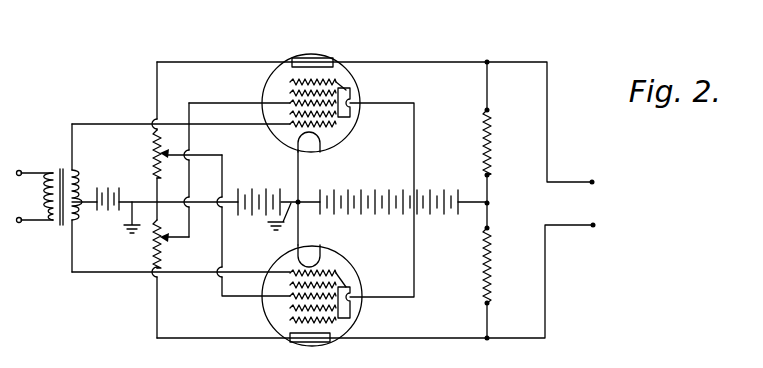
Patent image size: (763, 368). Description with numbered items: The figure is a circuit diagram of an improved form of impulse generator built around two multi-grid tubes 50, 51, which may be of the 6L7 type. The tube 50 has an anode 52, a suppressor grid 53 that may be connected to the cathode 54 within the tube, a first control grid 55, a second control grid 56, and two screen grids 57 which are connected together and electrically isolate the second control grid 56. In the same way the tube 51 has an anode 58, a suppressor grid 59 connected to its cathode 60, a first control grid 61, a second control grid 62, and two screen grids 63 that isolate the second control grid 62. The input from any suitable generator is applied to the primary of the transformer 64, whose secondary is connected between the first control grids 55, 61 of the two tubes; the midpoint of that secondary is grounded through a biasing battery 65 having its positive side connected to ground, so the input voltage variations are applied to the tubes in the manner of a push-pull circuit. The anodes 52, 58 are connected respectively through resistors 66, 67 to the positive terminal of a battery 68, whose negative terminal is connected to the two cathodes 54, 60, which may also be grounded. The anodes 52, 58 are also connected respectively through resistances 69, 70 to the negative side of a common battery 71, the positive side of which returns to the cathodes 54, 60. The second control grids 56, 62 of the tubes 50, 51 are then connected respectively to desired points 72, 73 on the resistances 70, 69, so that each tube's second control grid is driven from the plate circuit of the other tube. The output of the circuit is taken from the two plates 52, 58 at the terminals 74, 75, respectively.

The tube 50 is at (270, 321).
The tube 51 is at (271, 72).
The anode 52 is at (316, 342).
The suppressor grid 53 is at (285, 320).
The cathode 54 is at (310, 265).
The first control grid 55 is at (290, 272).
The second control grid 56 is at (288, 296).
The screen grids 57 is at (350, 286).
The anode 58 is at (312, 58).
The suppressor grid 59 is at (338, 92).
The cathode 60 is at (320, 152).
The first control grid 61 is at (278, 139).
The second control grid 62 is at (296, 103).
The screen grids 63 is at (353, 89).
The transformer 64 is at (53, 228).
The biasing battery 65 is at (116, 188).
The resistor 66 is at (486, 292).
The resistor 67 is at (486, 123).
The battery 68 is at (438, 188).
The resistance 69 is at (154, 258).
The resistance 70 is at (155, 150).
The common battery 71 is at (254, 190).
The point 72 is at (185, 155).
The point 73 is at (184, 237).
The terminal 74 is at (593, 228).
The terminal 75 is at (592, 182).